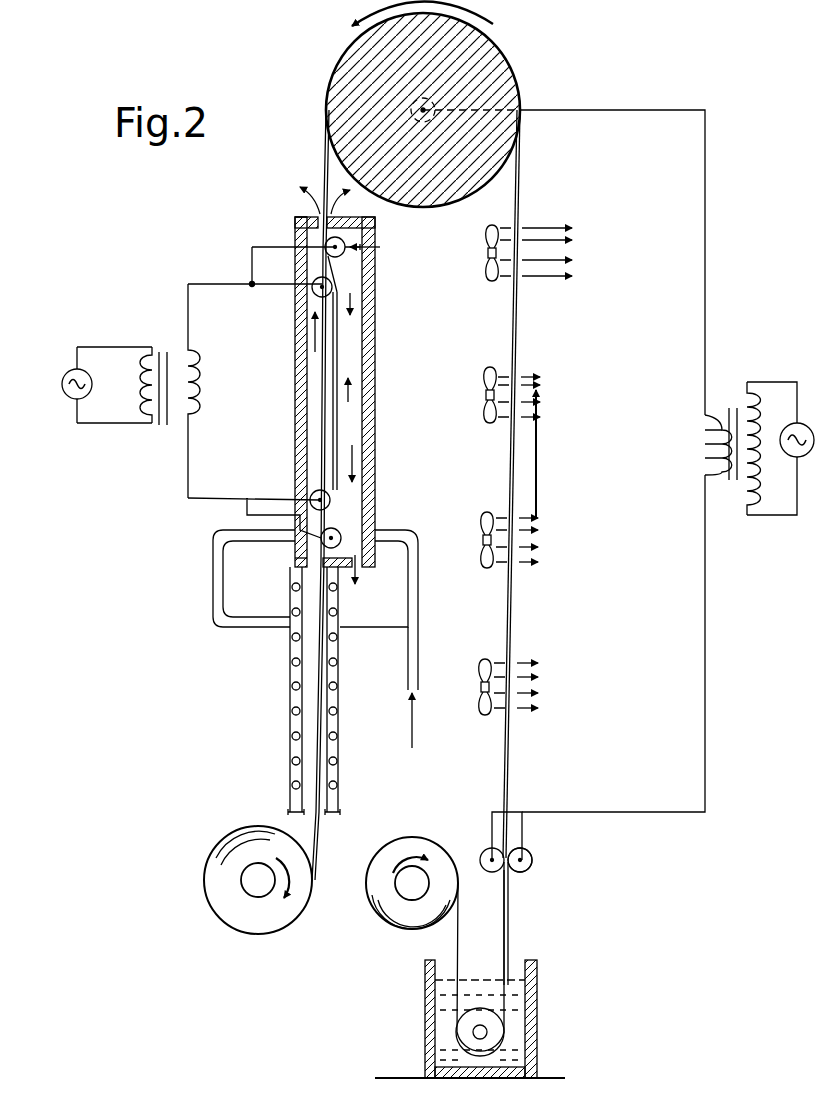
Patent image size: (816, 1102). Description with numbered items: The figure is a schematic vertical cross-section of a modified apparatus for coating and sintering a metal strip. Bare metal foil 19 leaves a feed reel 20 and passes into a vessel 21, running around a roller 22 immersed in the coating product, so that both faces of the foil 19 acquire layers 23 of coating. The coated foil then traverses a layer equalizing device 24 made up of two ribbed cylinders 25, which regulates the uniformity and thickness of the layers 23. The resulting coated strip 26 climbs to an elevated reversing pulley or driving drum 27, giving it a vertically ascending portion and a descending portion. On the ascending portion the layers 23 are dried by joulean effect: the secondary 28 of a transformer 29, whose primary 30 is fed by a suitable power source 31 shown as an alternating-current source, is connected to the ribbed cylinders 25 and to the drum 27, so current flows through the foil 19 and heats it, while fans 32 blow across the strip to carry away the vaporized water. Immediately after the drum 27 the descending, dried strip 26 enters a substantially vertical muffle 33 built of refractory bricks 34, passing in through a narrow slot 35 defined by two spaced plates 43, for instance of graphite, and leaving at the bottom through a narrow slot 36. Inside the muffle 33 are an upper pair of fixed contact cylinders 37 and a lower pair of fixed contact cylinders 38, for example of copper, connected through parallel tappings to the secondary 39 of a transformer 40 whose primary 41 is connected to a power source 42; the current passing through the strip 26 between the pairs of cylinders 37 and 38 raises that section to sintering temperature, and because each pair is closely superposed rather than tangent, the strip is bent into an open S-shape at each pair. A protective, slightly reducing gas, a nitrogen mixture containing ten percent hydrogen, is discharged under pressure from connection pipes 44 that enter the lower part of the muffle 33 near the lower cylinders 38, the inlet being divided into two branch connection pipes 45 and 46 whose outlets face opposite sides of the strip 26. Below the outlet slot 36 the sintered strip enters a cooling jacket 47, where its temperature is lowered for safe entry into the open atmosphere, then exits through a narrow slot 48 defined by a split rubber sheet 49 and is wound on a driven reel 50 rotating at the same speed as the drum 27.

The bare metal foil 19 is at (457, 925).
The feed reel 20 is at (390, 890).
The vessel 21 is at (532, 1003).
The roller 22 is at (490, 1035).
The layers of coating product 23 is at (504, 910).
The layer equalizing device 24 is at (530, 855).
The ribbed cylinders 25 is at (521, 872).
The coated strip 26 is at (513, 772).
The driving drum 27 is at (362, 80).
The secondary 28 is at (700, 437).
The transformer 29 is at (732, 402).
The primary 30 is at (772, 448).
The AC source 31 is at (785, 455).
The fans 32 is at (488, 367).
The muffle 33 is at (375, 330).
The refractory bricks 34 is at (362, 388).
The narrow slot 35 is at (338, 216).
The narrow slot 36 is at (298, 570).
The upper fixed contact cylinders 37 is at (333, 290).
The lower fixed contact cylinders 38 is at (342, 536).
The secondary 39 is at (194, 372).
The transformer 40 is at (167, 340).
The primary 41 is at (142, 362).
The power source 42 is at (66, 374).
The plates 43 is at (279, 225).
The connection pipes 44 is at (418, 642).
The branch connection pipe 45 is at (418, 581).
The branch connection pipe 46 is at (215, 562).
The cooling jacket 47 is at (296, 722).
The narrow slot 48 is at (300, 812).
The split sheet 49 is at (333, 812).
The driven reel 50 is at (258, 880).